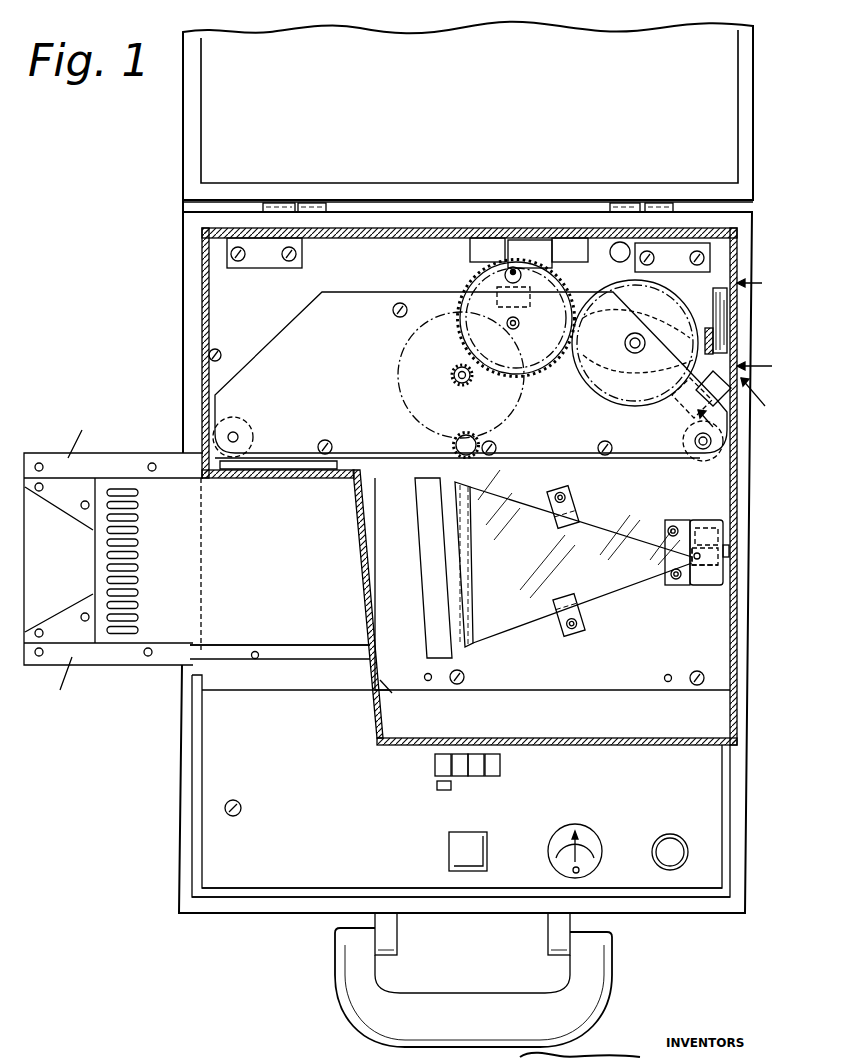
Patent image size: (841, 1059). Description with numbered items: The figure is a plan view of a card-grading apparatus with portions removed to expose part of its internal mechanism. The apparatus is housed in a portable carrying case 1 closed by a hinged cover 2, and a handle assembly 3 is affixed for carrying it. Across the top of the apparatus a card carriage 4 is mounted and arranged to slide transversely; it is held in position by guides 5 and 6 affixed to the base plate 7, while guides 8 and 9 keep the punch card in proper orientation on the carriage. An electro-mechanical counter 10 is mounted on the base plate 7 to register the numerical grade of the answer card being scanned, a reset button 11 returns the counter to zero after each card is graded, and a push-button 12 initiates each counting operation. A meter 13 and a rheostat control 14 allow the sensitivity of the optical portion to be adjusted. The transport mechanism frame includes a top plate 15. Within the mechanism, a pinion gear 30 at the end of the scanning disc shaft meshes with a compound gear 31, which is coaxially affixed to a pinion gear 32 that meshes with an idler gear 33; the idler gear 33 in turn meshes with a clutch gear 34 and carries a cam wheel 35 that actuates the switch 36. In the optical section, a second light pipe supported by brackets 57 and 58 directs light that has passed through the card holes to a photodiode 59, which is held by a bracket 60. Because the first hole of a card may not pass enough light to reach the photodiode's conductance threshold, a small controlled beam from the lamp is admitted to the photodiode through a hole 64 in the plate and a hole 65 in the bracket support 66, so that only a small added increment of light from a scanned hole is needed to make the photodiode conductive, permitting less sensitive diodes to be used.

The portable carrying case 1 is at (745, 353).
The hinged cover 2 is at (745, 125).
The handle assembly 3 is at (615, 957).
The card carriage 4 is at (167, 503).
The guide 5 is at (398, 468).
The guide 6 is at (285, 682).
The base plate 7 is at (212, 725).
The guide 8 is at (425, 366).
The guide 9 is at (420, 547).
The electro-mechanical counter 10 is at (500, 765).
The reset button 11 is at (438, 792).
The push-button 12 is at (475, 864).
The meter 13 is at (593, 862).
The rheostat control 14 is at (677, 855).
The top plate 15 is at (235, 285).
The pinion gear 30 is at (453, 444).
The compound gear 31 is at (403, 402).
The pinion gear 32 is at (462, 384).
The idler gear 33 is at (467, 287).
The clutch gear 34 is at (687, 292).
The cam wheel 35 is at (528, 298).
The switch 36 is at (537, 247).
The bracket 57 is at (584, 625).
The bracket 58 is at (683, 586).
The photodiode 59 is at (723, 546).
The bracket 60 is at (700, 525).
The hole 64 is at (700, 588).
The hole 65 is at (705, 556).
The bracket support 66 is at (698, 652).